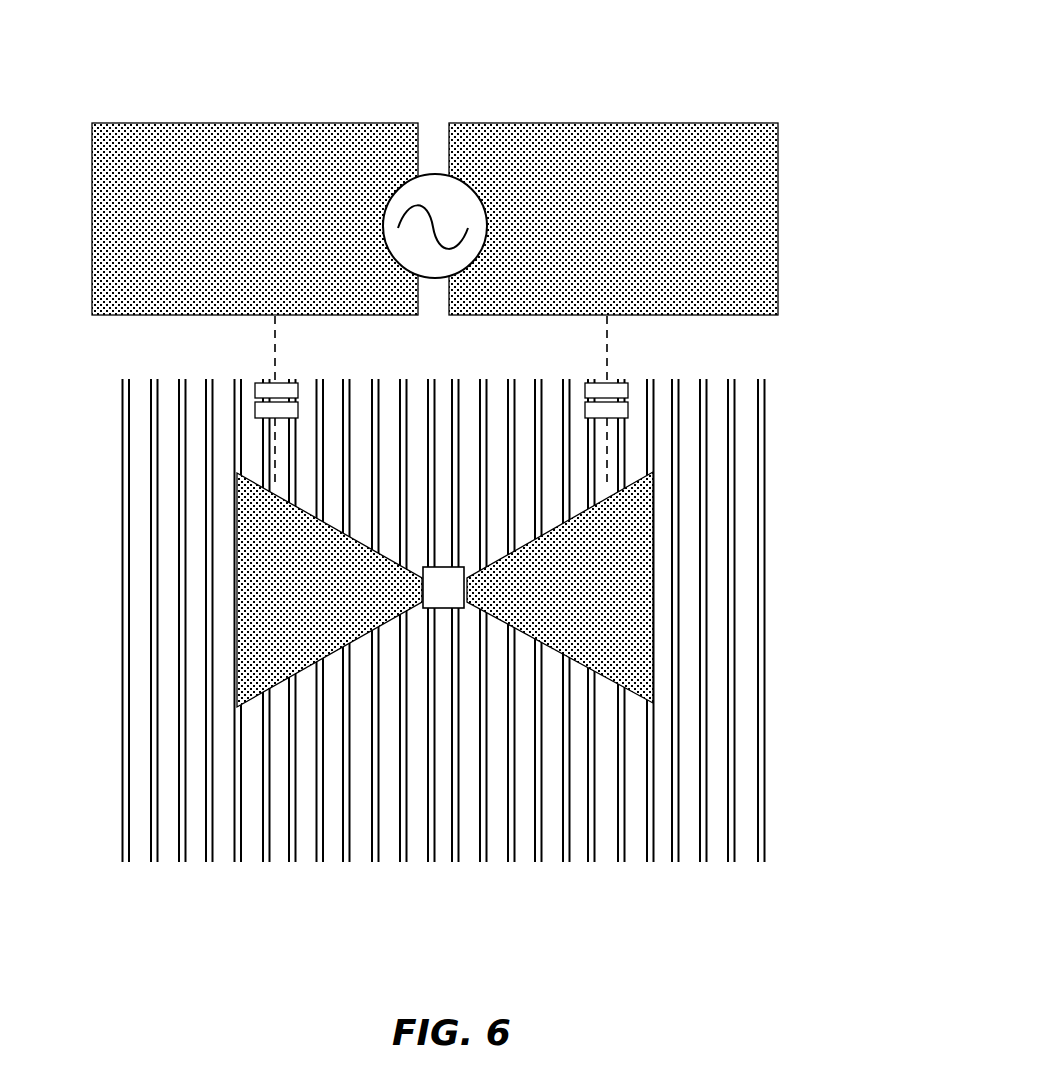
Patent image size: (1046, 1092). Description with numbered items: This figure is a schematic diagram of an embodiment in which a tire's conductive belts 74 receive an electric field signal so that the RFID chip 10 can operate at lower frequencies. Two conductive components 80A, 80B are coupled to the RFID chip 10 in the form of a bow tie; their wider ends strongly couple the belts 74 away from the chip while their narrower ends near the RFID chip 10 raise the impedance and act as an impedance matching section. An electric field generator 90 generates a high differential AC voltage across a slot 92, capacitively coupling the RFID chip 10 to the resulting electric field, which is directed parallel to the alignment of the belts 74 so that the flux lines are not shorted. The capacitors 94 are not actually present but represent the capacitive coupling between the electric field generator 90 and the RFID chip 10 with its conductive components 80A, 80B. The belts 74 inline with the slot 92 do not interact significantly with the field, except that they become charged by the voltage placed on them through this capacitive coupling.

The RFID chip 10 is at (440, 610).
The belts 74 is at (158, 682).
The conductive component 80A is at (237, 580).
The conductive component 80B is at (652, 520).
The electric field generator 90 is at (684, 88).
The slot 92 is at (415, 450).
The capacitors 94 is at (265, 393).